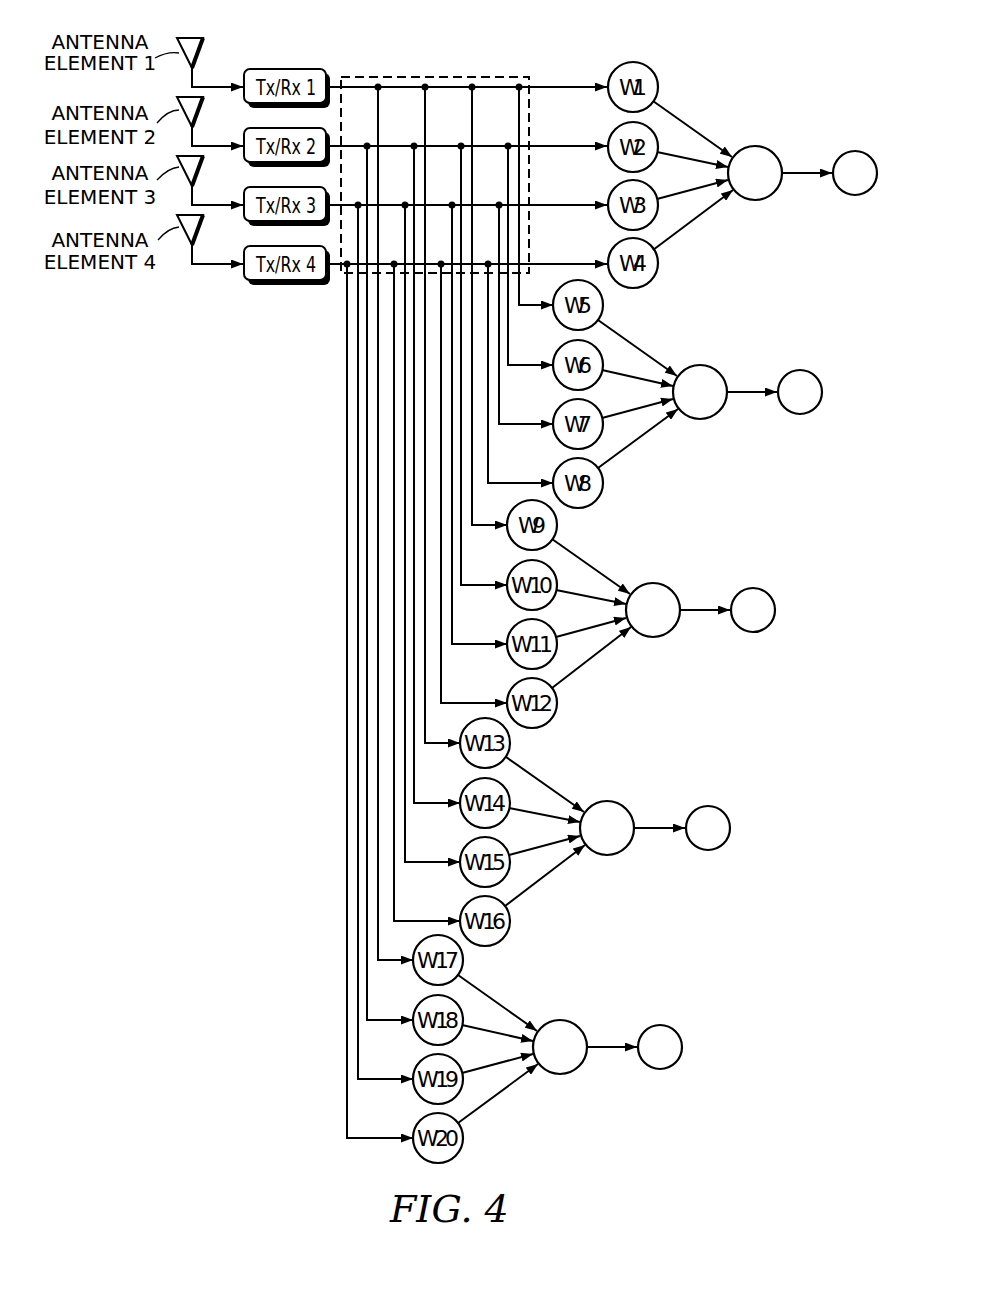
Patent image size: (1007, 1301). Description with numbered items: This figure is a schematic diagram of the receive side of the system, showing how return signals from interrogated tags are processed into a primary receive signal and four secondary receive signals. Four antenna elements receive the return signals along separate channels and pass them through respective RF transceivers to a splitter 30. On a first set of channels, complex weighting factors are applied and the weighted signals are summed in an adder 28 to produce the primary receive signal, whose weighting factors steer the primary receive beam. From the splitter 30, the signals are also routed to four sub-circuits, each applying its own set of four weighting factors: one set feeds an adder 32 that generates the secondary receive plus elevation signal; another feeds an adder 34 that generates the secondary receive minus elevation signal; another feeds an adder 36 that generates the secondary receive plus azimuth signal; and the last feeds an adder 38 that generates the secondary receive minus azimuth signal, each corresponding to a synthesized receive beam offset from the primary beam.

The adder 28 is at (758, 147).
The splitter 30 is at (450, 66).
The adder 32 is at (703, 366).
The adder 34 is at (656, 584).
The adder 36 is at (610, 802).
The adder 38 is at (565, 1021).